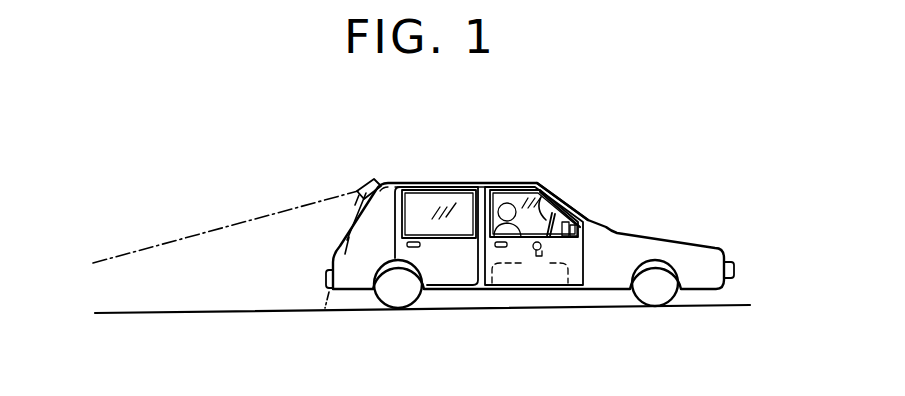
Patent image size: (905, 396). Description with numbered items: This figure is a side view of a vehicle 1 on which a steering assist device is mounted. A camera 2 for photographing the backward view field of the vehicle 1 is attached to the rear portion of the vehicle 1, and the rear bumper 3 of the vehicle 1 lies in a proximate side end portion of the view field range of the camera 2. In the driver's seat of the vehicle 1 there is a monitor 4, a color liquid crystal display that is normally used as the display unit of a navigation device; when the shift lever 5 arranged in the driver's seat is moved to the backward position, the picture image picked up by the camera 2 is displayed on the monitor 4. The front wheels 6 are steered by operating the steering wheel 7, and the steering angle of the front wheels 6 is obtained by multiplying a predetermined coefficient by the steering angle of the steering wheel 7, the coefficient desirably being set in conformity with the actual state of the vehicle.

The vehicle 1 is at (445, 183).
The camera 2 is at (362, 190).
The rear bumper 3 is at (326, 277).
The monitor 4 is at (588, 217).
The shift lever 5 is at (532, 252).
The front wheels 6 is at (653, 293).
The steering wheel 7 is at (541, 194).